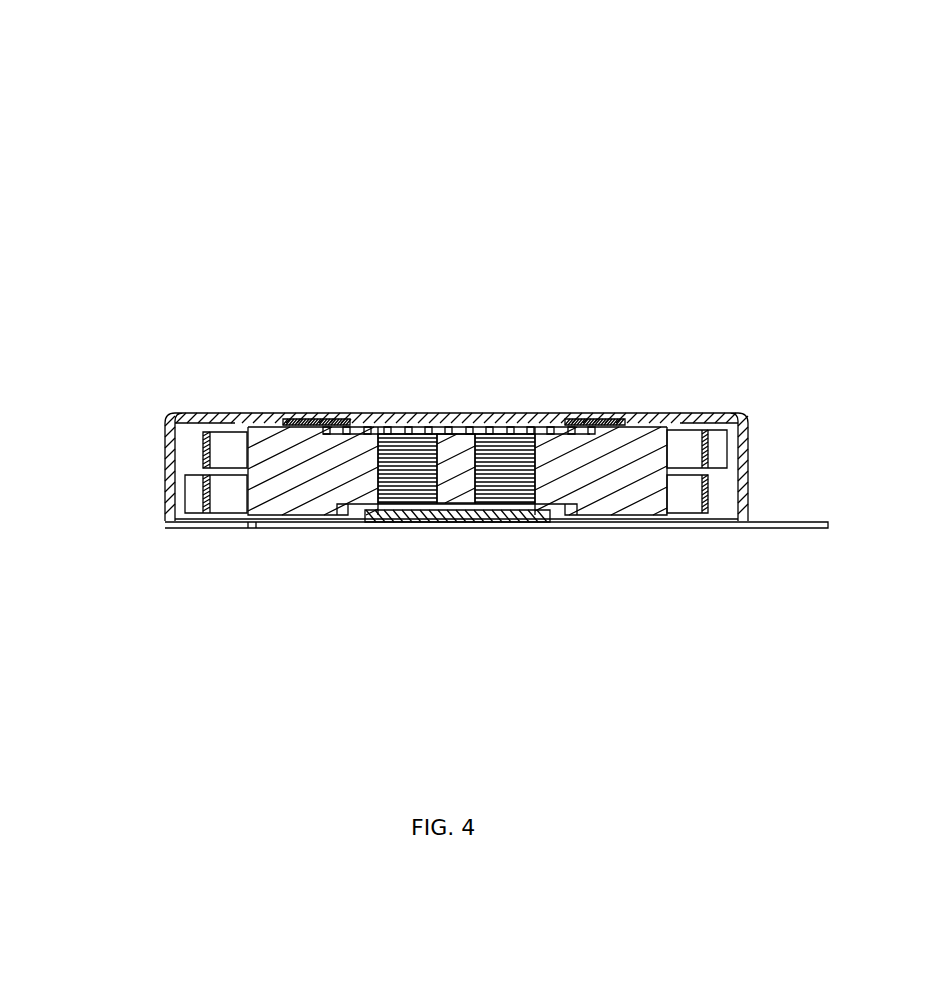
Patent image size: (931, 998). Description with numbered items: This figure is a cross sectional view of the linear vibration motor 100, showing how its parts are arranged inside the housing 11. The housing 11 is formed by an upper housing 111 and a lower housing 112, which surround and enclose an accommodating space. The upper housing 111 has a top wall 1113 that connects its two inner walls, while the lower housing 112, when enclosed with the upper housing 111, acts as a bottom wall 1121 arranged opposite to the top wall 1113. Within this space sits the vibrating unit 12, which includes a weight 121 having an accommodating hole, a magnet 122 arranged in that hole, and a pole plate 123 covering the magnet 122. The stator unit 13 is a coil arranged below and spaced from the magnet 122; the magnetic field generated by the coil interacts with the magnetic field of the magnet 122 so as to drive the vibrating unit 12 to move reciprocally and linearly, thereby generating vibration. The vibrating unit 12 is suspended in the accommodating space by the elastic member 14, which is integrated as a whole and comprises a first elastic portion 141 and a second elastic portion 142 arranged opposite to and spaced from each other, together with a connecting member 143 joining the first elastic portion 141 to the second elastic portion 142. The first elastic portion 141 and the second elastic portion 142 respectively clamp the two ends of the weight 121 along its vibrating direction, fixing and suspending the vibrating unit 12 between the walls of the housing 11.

The linear vibration motor 100 is at (471, 47).
The housing 11 is at (70, 405).
The upper housing 111 is at (166, 469).
The lower housing 112 is at (191, 531).
The top wall 1113 is at (203, 408).
The bottom wall 1121 is at (252, 528).
The vibrating unit 12 is at (682, 577).
The weight 121 is at (588, 485).
The magnet 122 is at (518, 475).
The pole plate 123 is at (455, 432).
The stator unit 13 is at (408, 527).
The elastic member 14 is at (585, 308).
The first elastic portion 141 is at (703, 424).
The second elastic portion 142 is at (229, 424).
The connecting member 143 is at (314, 420).